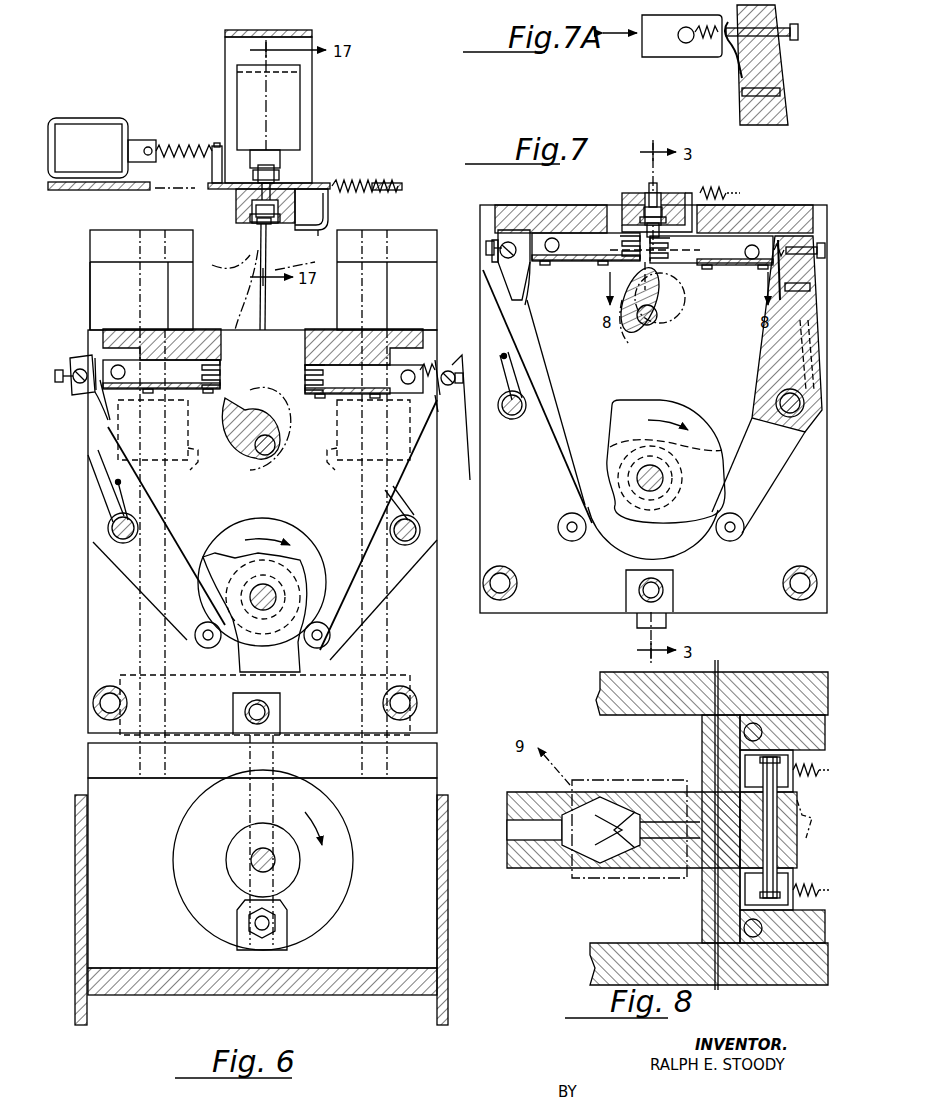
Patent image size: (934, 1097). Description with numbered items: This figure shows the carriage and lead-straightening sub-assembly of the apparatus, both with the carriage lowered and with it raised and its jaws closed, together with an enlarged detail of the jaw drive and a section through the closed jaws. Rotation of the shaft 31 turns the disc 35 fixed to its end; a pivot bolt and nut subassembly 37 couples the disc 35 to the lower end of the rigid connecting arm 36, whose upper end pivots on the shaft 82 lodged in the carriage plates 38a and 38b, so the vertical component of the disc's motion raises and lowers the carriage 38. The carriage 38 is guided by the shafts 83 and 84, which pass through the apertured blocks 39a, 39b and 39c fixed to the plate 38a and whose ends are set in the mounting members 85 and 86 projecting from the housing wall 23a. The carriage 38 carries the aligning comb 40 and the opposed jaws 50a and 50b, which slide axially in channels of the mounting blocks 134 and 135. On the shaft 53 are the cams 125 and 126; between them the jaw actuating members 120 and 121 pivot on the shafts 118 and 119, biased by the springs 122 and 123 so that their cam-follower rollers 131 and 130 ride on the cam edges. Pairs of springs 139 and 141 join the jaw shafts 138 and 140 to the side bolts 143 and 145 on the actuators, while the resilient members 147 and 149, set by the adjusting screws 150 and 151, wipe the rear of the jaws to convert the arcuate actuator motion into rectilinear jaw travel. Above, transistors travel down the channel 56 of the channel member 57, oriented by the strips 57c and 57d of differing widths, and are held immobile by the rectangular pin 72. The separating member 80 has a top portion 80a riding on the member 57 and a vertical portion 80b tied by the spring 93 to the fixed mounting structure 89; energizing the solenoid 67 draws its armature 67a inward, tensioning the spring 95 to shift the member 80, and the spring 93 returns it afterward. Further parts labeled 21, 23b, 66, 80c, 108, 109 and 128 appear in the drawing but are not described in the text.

In FIG. 6, the side post 21 is at (76, 970).
In FIG. 6, the front housing wall 23a is at (105, 280).
In FIG. 6, the bottom plate 23b is at (200, 990).
In FIG. 6, the shaft 31 is at (252, 856).
In FIG. 6, the disc 35 is at (215, 813).
In FIG. 6, the rigid connecting arm 36 is at (258, 756).
In FIG. 7, the rigid connecting arm 36 is at (637, 620).
In FIG. 6, the pivot bolt and nut subassembly 37 is at (255, 928).
In FIG. 6, the carriage sub-assembly 38 is at (108, 600).
In FIG. 7, the carriage wall 38a is at (558, 585).
In FIG. 8, the carriage wall 38a is at (630, 697).
In FIG. 8, the carriage wall 38b is at (620, 955).
In FIG. 6, the apertured block 39a is at (133, 660).
In FIG. 6, the apertured block 39b is at (162, 443).
In FIG. 6, the apertured block 39c is at (366, 442).
In FIG. 6, the aligning comb 40 is at (245, 460).
In FIG. 7, the aligning comb 40 is at (630, 340).
In FIG. 6, the jaw 50a is at (245, 322).
In FIG. 7, the jaw 50a is at (575, 262).
In FIG. 8, the jaw 50a is at (545, 850).
In FIG. 6, the jaw 50b is at (333, 345).
In FIG. 7A, the jaw 50b is at (658, 52).
In FIG. 7, the jaw 50b is at (718, 265).
In FIG. 8, the jaw 50b is at (660, 850).
In FIG. 6, the shaft 53 is at (268, 608).
In FIG. 6, the channel 56 is at (274, 210).
In FIG. 6, the channel member 57 is at (236, 206).
In FIG. 6, the strip 57c is at (272, 222).
In FIG. 6, the strip 57d is at (250, 222).
In FIG. 6, the cylinder 66 is at (287, 107).
In FIG. 6, the solenoid 67 is at (88, 136).
In FIG. 6, the armature 67a is at (143, 140).
In FIG. 6, the rectangular pin 72 is at (265, 160).
In FIG. 7, the rectangular pin 72 is at (648, 190).
In FIG. 7, the separating member 80 is at (698, 183).
In FIG. 6, the top portion 80a is at (315, 183).
In FIG. 6, the vertical portion 80b is at (328, 210).
In FIG. 6, the bowl lip 80c is at (318, 236).
In FIG. 6, the pivot pin 82 is at (245, 707).
In FIG. 7, the pivot pin 82 is at (663, 588).
In FIG. 6, the shaft 83 is at (155, 291).
In FIG. 6, the shaft 84 is at (378, 295).
In FIG. 6, the mounting member 85 is at (112, 244).
In FIG. 6, the mounting member 86 is at (115, 757).
In FIG. 6, the fixed mounting structure 89 is at (105, 191).
In FIG. 6, the spring 93 is at (360, 178).
In FIG. 6, the spring 95 is at (172, 143).
In FIG. 6, the wire clamp member 108 is at (270, 452).
In FIG. 7, the wire clamp member 108 is at (655, 325).
In FIG. 7, the clamp path 109 is at (675, 310).
In FIG. 6, the shaft 118 is at (108, 530).
In FIG. 7, the shaft 118 is at (526, 403).
In FIG. 6, the shaft 119 is at (405, 545).
In FIG. 7, the shaft 119 is at (795, 417).
In FIG. 6, the jaw actuating member 120 is at (126, 558).
In FIG. 7, the jaw actuating member 120 is at (532, 477).
In FIG. 6, the jaw actuating member 121 is at (395, 582).
In FIG. 7A, the jaw actuating member 121 is at (755, 110).
In FIG. 7, the jaw actuating member 121 is at (765, 495).
In FIG. 6, the spring 122 is at (100, 488).
In FIG. 7, the spring 122 is at (520, 375).
In FIG. 6, the spring 123 is at (395, 505).
In FIG. 7, the spring 123 is at (795, 367).
In FIG. 6, the cam 125 is at (225, 568).
In FIG. 7, the cam 125 is at (668, 415).
In FIG. 6, the cam 126 is at (256, 535).
In FIG. 7, the cam 126 is at (617, 530).
In FIG. 7, the slot 128 is at (660, 275).
In FIG. 6, the cam-follower roller 130 is at (328, 625).
In FIG. 7, the cam-follower roller 130 is at (740, 532).
In FIG. 6, the cam-follower roller 131 is at (198, 645).
In FIG. 7, the cam-follower roller 131 is at (560, 520).
In FIG. 6, the mounting block 134 is at (200, 330).
In FIG. 7, the mounting block 134 is at (548, 233).
In FIG. 6, the mounting block 135 is at (305, 350).
In FIG. 7, the mounting block 135 is at (745, 215).
In FIG. 8, the mounting block 135 is at (702, 760).
In FIG. 6, the shaft 138 is at (118, 365).
In FIG. 7, the shaft 138 is at (560, 238).
In FIG. 6, the springs 139 is at (96, 370).
In FIG. 7, the springs 139 is at (515, 230).
In FIG. 6, the shaft 140 is at (408, 384).
In FIG. 7A, the shaft 140 is at (684, 44).
In FIG. 7, the shaft 140 is at (752, 252).
In FIG. 8, the shaft 140 is at (777, 853).
In FIG. 6, the springs 141 is at (440, 365).
In FIG. 7A, the springs 141 is at (702, 40).
In FIG. 7, the springs 141 is at (790, 247).
In FIG. 8, the springs 141 is at (796, 768).
In FIG. 6, the side bolt 143 is at (72, 365).
In FIG. 7, the side bolt 143 is at (498, 252).
In FIG. 6, the side bolt 145 is at (448, 371).
In FIG. 6, the resilient member 147 is at (103, 405).
In FIG. 7, the resilient member 147 is at (527, 285).
In FIG. 6, the resilient member 149 is at (435, 405).
In FIG. 7A, the resilient member 149 is at (733, 60).
In FIG. 7, the resilient member 149 is at (778, 280).
In FIG. 8, the resilient member 149 is at (815, 805).
In FIG. 6, the adjusting screw 150 is at (60, 382).
In FIG. 7, the adjusting screw 150 is at (486, 250).
In FIG. 6, the adjusting screw 151 is at (462, 390).
In FIG. 7A, the adjusting screw 151 is at (796, 40).
In FIG. 7, the adjusting screw 151 is at (820, 235).